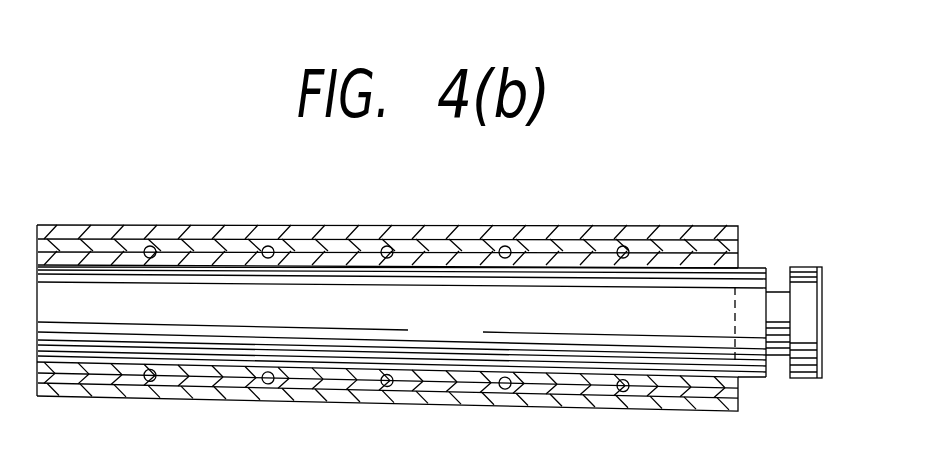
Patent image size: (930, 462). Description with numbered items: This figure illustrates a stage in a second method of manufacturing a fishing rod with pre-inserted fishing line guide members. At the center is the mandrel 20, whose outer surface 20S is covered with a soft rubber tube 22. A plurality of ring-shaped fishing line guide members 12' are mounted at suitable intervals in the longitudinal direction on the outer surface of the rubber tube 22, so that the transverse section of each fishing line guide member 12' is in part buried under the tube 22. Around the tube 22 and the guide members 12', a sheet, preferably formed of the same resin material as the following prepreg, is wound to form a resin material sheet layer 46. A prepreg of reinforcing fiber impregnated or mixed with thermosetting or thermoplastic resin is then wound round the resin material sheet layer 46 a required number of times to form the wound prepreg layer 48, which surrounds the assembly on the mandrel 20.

The mandrel 20 is at (457, 335).
The outer surface 20S is at (542, 267).
The soft rubber tube 22 is at (423, 260).
The resin material sheet layer 46 is at (339, 246).
The wound prepreg layer 48 is at (114, 233).
The ring-shaped fishing line guide member 12' is at (386, 277).